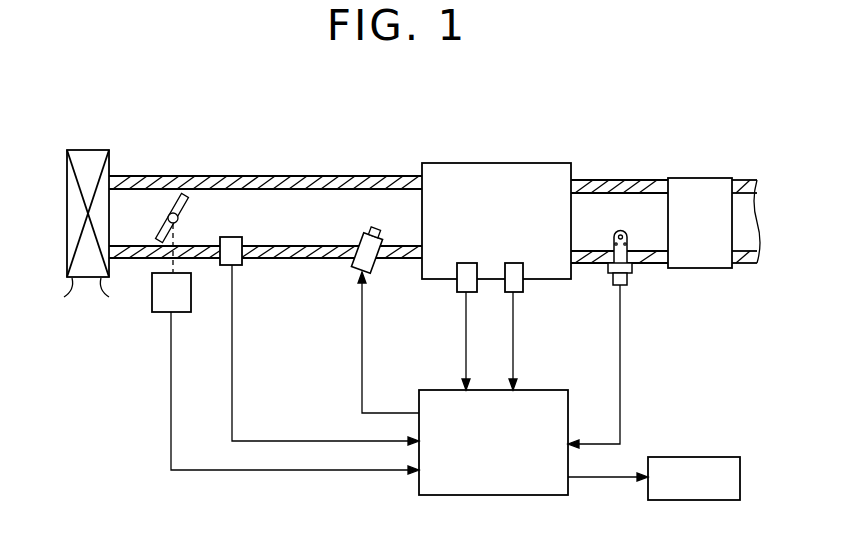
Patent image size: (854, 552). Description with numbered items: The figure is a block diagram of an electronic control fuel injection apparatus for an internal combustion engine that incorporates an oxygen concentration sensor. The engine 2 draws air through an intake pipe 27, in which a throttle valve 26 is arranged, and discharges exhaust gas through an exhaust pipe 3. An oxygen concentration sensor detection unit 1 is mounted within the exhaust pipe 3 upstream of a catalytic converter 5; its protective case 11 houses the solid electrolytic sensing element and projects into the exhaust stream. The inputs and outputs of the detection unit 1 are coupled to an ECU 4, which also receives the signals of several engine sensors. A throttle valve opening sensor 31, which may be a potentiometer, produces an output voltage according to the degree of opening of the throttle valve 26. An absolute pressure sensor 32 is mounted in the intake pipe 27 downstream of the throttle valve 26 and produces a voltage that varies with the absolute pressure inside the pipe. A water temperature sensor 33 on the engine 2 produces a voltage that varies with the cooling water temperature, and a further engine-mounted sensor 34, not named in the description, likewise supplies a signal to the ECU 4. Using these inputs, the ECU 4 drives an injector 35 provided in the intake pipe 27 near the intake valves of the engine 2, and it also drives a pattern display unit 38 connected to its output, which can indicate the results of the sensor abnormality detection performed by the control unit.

The oxygen concentration sensor detection unit 1 is at (613, 325).
The engine 2 is at (500, 162).
The exhaust pipe 3 is at (622, 179).
The ECU 4 is at (570, 431).
The catalytic converter 5 is at (697, 177).
The protective case 11 is at (613, 235).
The throttle valve 26 is at (185, 198).
The intake pipe 27 is at (335, 175).
The throttle valve opening sensor 31 is at (152, 305).
The absolute pressure sensor 32 is at (240, 267).
The water temperature sensor 33 is at (458, 290).
The coolant temperature sensor 34 is at (526, 290).
The injector 35 is at (356, 274).
The pattern display unit 38 is at (702, 456).